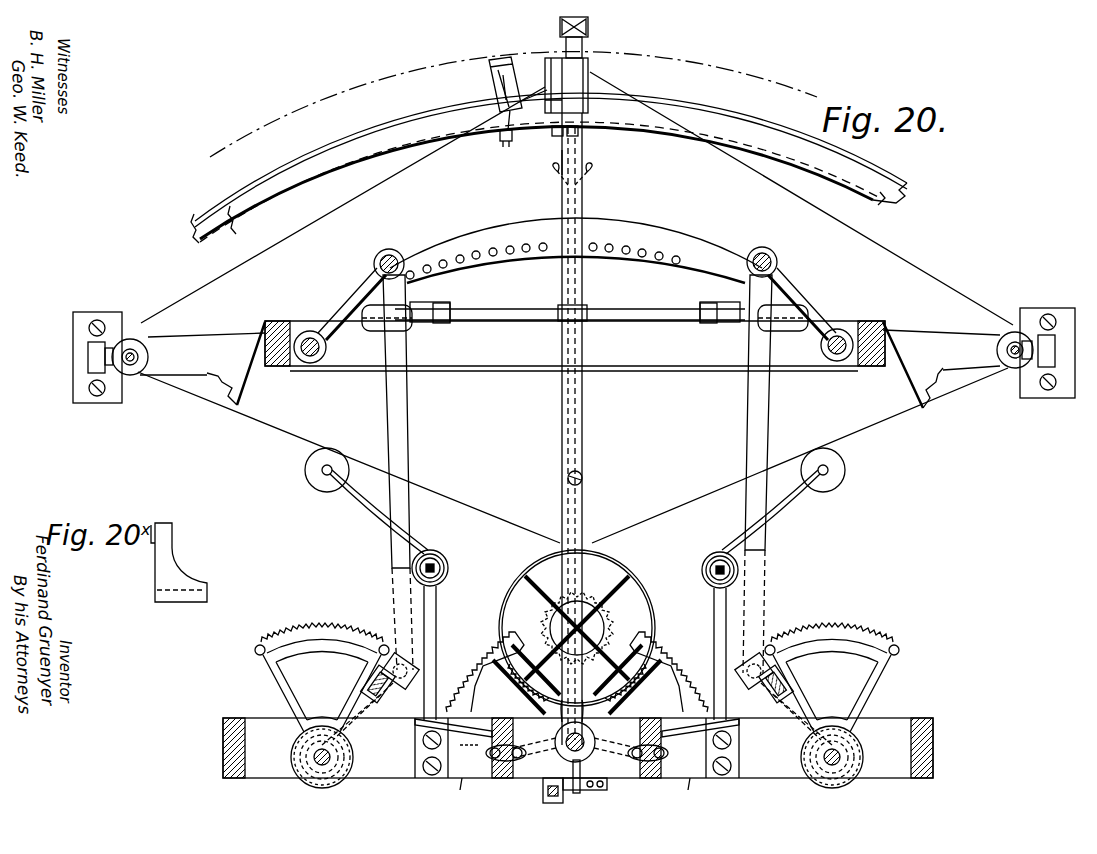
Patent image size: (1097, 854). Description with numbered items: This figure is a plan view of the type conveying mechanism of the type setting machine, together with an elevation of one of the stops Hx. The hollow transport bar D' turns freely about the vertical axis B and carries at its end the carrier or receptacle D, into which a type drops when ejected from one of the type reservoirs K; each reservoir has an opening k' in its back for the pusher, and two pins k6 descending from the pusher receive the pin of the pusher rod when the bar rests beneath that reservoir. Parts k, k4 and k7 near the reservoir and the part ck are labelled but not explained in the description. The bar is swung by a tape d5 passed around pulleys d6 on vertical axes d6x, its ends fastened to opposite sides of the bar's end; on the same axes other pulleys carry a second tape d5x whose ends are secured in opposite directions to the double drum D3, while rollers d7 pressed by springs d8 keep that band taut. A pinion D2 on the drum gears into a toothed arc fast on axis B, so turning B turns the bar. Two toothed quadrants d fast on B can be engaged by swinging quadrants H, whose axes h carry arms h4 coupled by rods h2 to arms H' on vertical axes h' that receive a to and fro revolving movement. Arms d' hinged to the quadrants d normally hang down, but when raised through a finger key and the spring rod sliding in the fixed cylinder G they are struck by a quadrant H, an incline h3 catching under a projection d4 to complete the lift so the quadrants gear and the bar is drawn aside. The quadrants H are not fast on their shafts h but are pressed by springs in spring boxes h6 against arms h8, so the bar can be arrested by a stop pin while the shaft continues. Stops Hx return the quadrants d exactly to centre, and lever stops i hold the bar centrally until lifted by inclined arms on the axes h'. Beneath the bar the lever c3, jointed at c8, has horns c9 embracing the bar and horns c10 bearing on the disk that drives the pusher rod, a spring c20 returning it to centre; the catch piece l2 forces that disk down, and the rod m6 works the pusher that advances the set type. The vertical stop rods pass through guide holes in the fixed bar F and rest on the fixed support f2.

In FIG. 20, the carrier D is at (584, 37).
In FIG. 20, the curved guide rail k4 is at (518, 66).
In FIG. 20, the opening k' is at (491, 93).
In FIG. 20, the type reservoir K is at (504, 87).
In FIG. 20, the clamp connecting link k is at (534, 109).
In FIG. 20, the clamp block on rod k7 is at (586, 106).
In FIG. 20, the pins k6 is at (552, 134).
In FIG. 20, the spring c20 is at (583, 152).
In FIG. 20, the lever c3 is at (590, 170).
In FIG. 20, the transport bar D' is at (572, 429).
In FIG. 20, the tape d5 is at (300, 228).
In FIG. 20, the tape d5x is at (900, 316).
In FIG. 20, the vertical axes d6x is at (140, 352).
In FIG. 20, the pulleys d6 is at (145, 362).
In FIG. 20, the vertical axis h' is at (575, 355).
In FIG. 20, the arms H' is at (577, 293).
In FIG. 20, the fixed bar F is at (528, 233).
In FIG. 20, the fixed support f2 is at (518, 255).
In FIG. 20, the rods h2 is at (406, 413).
In FIG. 20, the lever stops i is at (504, 318).
In FIG. 20, the horns c9 is at (583, 303).
In FIG. 20, the joint c8 is at (583, 480).
In FIG. 20, the rollers d7 is at (335, 462).
In FIG. 20, the springs d8 is at (434, 550).
In FIG. 20, the double wheel or drum D3 is at (640, 586).
In FIG. 20, the pinion D2 is at (604, 622).
In FIG. 20, the toothed quadrants d is at (574, 673).
In FIG. 20, the horns c10 is at (523, 692).
In FIG. 20, the lower toothed segment right ck is at (625, 692).
In FIG. 20, the quadrants H is at (577, 661).
In FIG. 20, the axes h is at (588, 766).
In FIG. 20, the spring boxes h6 is at (300, 775).
In FIG. 20, the incline h3 is at (577, 678).
In FIG. 20, the arms h4 is at (577, 711).
In FIG. 20, the arms h8 is at (378, 720).
In FIG. 20, the vertical axis B is at (578, 739).
In FIG. 20, the fixed cylinder G is at (578, 758).
In FIG. 20, the projection d4 is at (412, 730).
In FIG. 20, the arms d' is at (577, 744).
In FIG. 20, the stops Hx is at (585, 791).
In FIG. 20X, the stops Hx is at (179, 562).
In FIG. 20, the rod m6 is at (540, 791).
In FIG. 20, the catch piece l2 is at (590, 792).